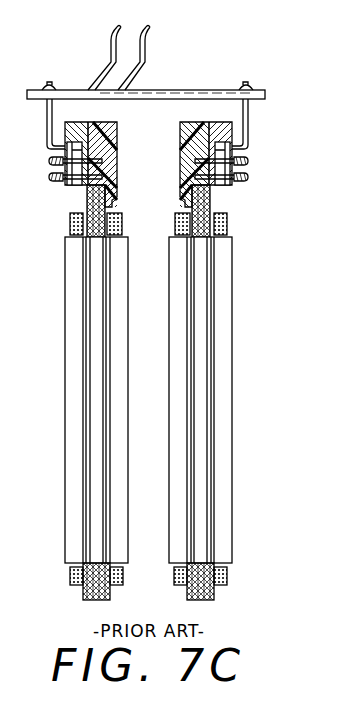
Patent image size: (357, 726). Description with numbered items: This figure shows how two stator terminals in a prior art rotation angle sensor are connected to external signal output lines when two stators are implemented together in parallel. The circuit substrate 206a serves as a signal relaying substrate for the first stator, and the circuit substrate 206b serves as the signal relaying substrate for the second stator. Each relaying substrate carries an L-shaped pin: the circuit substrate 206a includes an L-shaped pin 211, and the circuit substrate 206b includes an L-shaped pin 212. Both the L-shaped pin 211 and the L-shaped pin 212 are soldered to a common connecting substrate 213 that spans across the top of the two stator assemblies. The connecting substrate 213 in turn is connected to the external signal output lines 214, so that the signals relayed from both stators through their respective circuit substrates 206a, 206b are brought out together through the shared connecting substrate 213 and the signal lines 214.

The external signal output lines 214 is at (112, 34).
The L-shaped pin 211 is at (47, 118).
The L-shaped pin 212 is at (244, 114).
The connecting substrate 213 is at (175, 99).
The circuit substrate 206a is at (67, 186).
The circuit substrate 206b is at (228, 186).